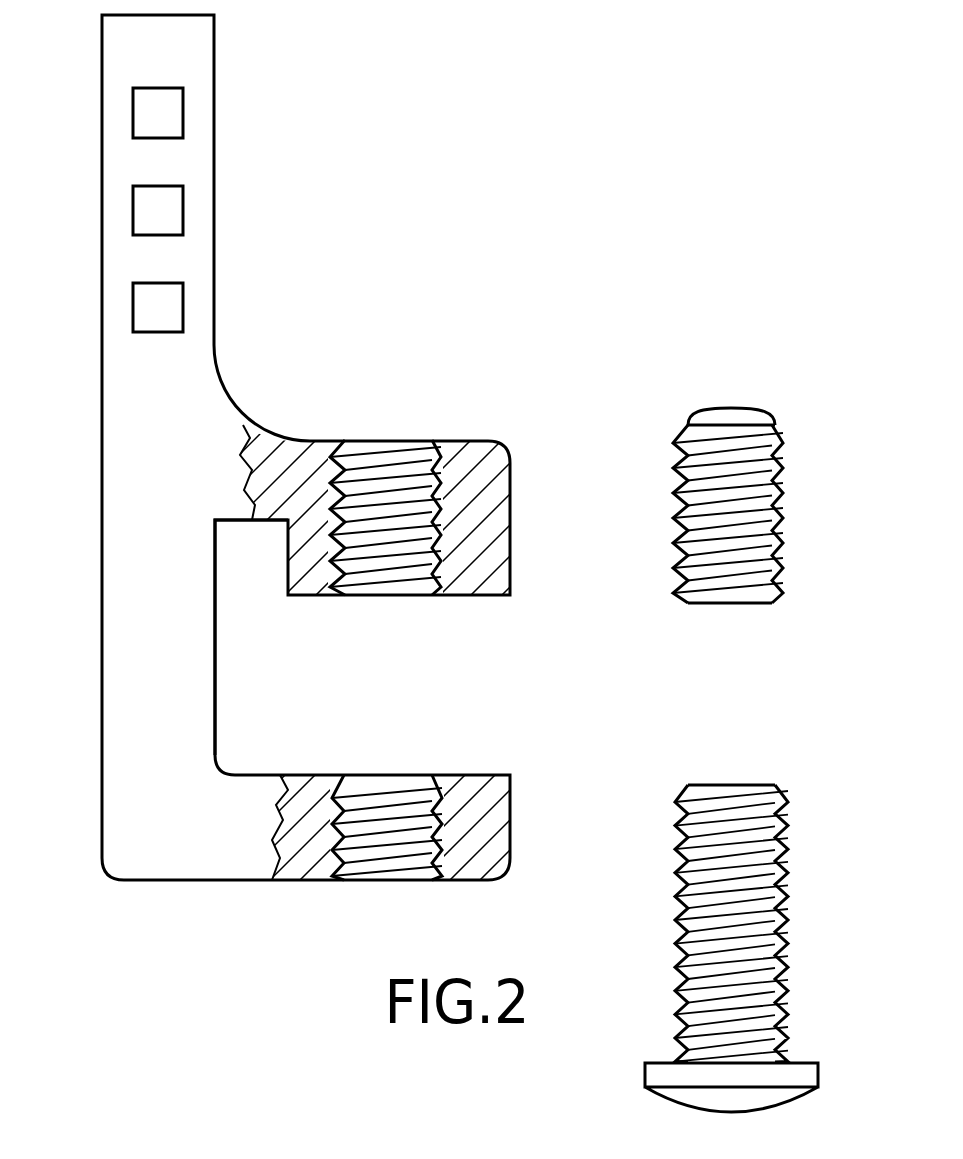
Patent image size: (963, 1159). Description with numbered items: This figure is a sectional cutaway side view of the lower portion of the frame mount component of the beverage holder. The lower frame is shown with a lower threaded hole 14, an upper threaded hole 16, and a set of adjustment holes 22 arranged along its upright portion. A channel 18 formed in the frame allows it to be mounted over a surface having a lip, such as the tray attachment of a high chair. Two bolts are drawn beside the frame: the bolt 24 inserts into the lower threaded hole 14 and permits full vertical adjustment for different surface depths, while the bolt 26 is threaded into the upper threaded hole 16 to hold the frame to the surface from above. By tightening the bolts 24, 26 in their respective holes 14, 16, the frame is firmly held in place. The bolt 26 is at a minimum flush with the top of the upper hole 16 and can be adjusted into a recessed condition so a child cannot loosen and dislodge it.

The lower threaded hole 14 is at (391, 785).
The upper threaded hole 16 is at (390, 450).
The channel 18 is at (252, 568).
The adjustment holes 22 is at (147, 113).
The bolt 24 is at (675, 879).
The bolt 26 is at (785, 505).